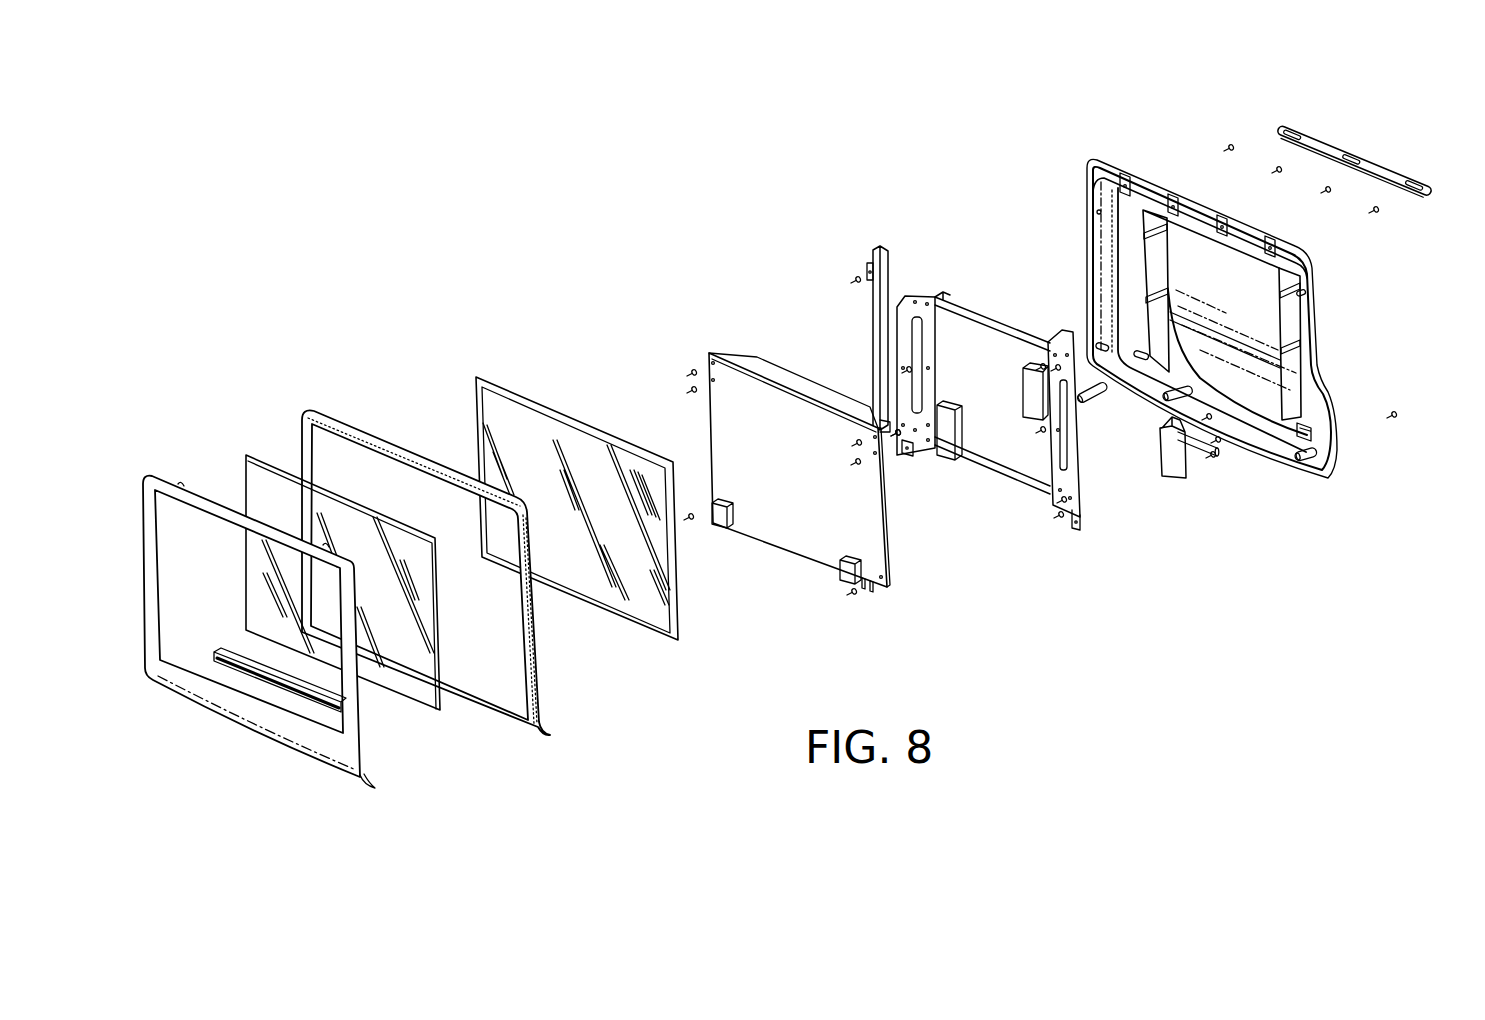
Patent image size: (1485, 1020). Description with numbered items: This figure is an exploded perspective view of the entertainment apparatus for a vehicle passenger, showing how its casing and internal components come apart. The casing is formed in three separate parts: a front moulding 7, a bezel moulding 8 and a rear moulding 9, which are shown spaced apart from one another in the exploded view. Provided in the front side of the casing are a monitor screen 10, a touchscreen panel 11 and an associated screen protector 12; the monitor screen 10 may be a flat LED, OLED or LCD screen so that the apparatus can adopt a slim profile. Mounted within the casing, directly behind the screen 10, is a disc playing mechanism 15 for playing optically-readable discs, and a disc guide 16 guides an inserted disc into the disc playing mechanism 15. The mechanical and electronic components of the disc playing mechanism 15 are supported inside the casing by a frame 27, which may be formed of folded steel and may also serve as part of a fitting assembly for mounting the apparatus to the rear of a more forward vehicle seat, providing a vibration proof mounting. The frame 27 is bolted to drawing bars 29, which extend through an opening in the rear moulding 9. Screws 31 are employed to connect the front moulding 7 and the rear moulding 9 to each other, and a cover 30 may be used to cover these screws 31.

The front moulding 7 is at (250, 716).
The bezel moulding 8 is at (372, 422).
The rear moulding 9 is at (1087, 159).
The monitor screen 10 is at (632, 603).
The touchscreen panel 11 is at (530, 380).
The screen protector 12 is at (260, 467).
The disc playing mechanism 15 is at (900, 589).
The disc guide 16 is at (231, 652).
The frame 27 is at (873, 246).
The drawing bars 29 is at (1168, 472).
The cover 30 is at (1333, 137).
The screws 31 is at (1375, 216).